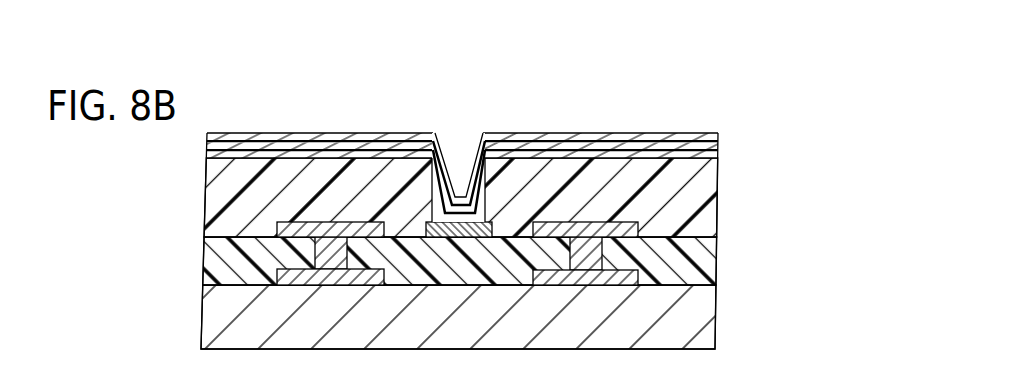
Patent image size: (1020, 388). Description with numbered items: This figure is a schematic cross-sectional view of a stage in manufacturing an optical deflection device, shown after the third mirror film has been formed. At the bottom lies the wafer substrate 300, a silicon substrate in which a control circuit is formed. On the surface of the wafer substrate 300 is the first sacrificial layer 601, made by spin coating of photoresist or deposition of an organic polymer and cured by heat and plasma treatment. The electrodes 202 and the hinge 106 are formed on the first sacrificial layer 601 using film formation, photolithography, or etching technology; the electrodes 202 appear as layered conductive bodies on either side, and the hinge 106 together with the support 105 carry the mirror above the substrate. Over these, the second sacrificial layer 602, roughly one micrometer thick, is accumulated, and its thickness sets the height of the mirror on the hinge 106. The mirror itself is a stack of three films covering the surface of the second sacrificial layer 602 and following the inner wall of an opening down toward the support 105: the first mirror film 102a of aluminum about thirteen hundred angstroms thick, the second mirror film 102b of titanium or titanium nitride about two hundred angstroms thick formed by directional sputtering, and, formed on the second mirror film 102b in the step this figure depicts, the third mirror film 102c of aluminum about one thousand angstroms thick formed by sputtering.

The wafer substrate 300 is at (718, 311).
The first sacrificial layer 601 is at (718, 258).
The second sacrificial layer 602 is at (718, 208).
The first mirror film 102a is at (722, 157).
The second mirror film 102b is at (720, 145).
The third mirror film 102c is at (719, 134).
The electrode 202 is at (327, 230).
The support 105 is at (506, 189).
The hinge 106 is at (428, 218).